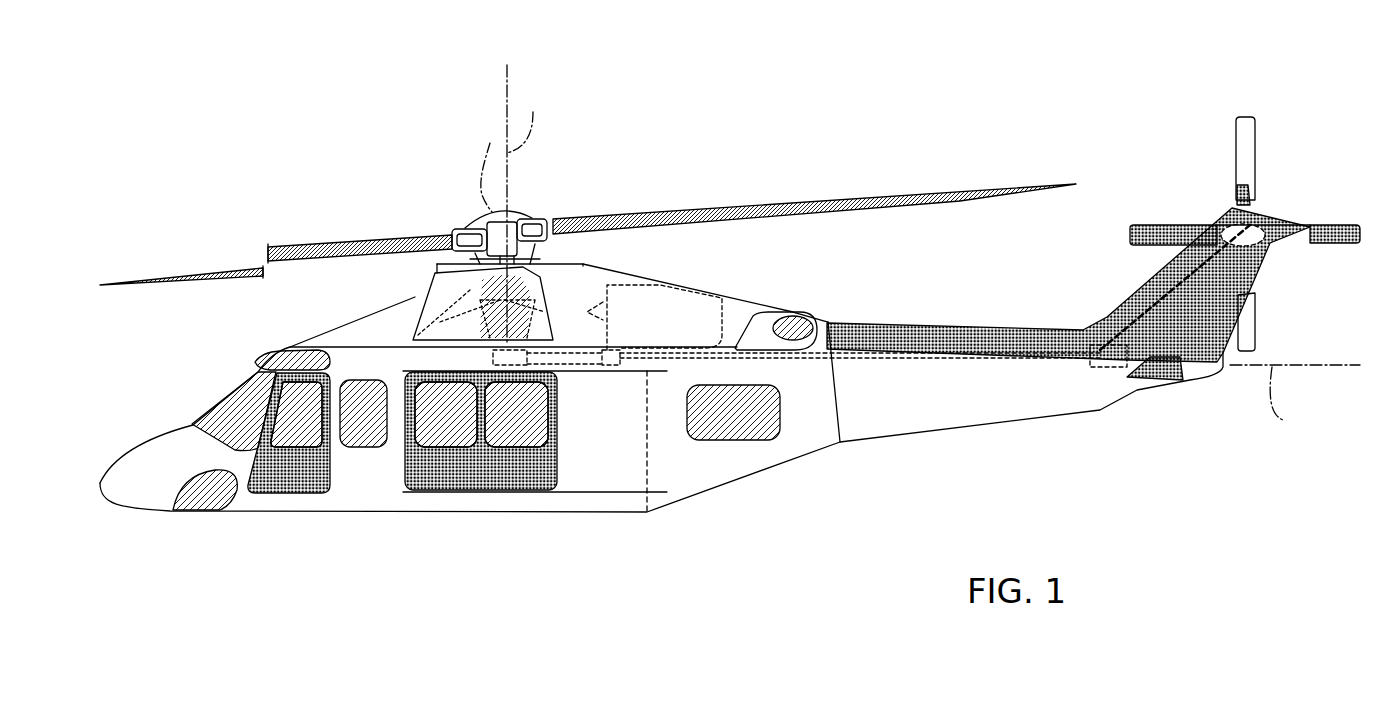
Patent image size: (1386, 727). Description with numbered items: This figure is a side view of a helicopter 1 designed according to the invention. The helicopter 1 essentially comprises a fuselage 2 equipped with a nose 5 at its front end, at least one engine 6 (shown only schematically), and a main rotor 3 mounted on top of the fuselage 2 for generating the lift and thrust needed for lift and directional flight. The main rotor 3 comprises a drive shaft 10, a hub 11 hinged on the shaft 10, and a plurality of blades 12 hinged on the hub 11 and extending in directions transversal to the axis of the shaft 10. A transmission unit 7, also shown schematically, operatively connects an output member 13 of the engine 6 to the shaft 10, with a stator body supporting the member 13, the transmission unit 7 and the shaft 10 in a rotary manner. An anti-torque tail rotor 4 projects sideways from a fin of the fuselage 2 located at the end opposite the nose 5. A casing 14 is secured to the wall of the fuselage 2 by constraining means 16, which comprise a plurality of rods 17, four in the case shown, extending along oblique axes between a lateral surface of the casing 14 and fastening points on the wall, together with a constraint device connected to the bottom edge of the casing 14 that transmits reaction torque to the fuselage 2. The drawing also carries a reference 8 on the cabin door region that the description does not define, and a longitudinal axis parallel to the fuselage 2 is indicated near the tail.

The helicopter 1 is at (466, 172).
The fuselage 2 is at (678, 480).
The main rotor 3 is at (588, 205).
The anti-torque tail rotor 4 is at (1329, 216).
The nose 5 is at (150, 457).
The engine 6 is at (690, 310).
The transmission unit 7 is at (848, 366).
The cockpit door 8 is at (340, 437).
The drive shaft 10 is at (494, 245).
The hub 11 is at (539, 211).
The blades 12 is at (833, 202).
The output member 13 is at (578, 374).
The casing 14 is at (513, 297).
The constraining means 16 is at (592, 254).
The rods 17 is at (440, 322).